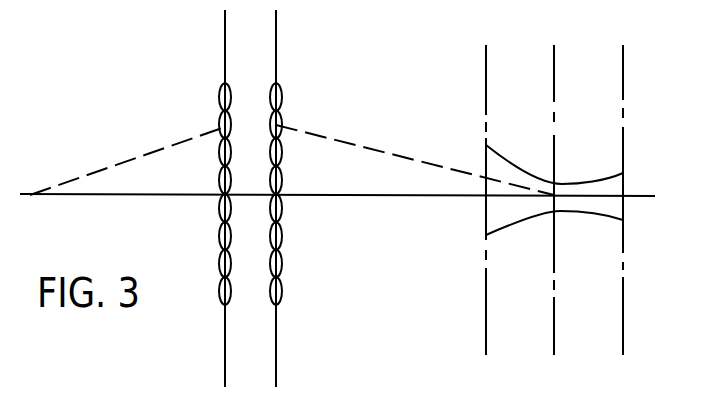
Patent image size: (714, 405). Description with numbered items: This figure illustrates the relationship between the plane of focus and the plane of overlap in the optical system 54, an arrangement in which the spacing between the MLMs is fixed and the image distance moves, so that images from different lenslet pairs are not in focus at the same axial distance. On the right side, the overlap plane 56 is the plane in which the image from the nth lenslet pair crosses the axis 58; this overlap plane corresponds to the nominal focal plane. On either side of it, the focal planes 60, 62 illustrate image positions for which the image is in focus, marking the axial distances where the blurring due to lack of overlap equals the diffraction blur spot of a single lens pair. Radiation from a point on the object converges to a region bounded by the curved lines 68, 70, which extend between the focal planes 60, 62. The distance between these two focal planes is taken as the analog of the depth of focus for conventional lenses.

The optical system 54 is at (138, 94).
The overlap plane 56 is at (556, 93).
The axis 58 is at (642, 201).
The focal plane 60 is at (486, 88).
The focal plane 62 is at (624, 92).
The curved line 68 is at (518, 168).
The curved line 70 is at (527, 221).